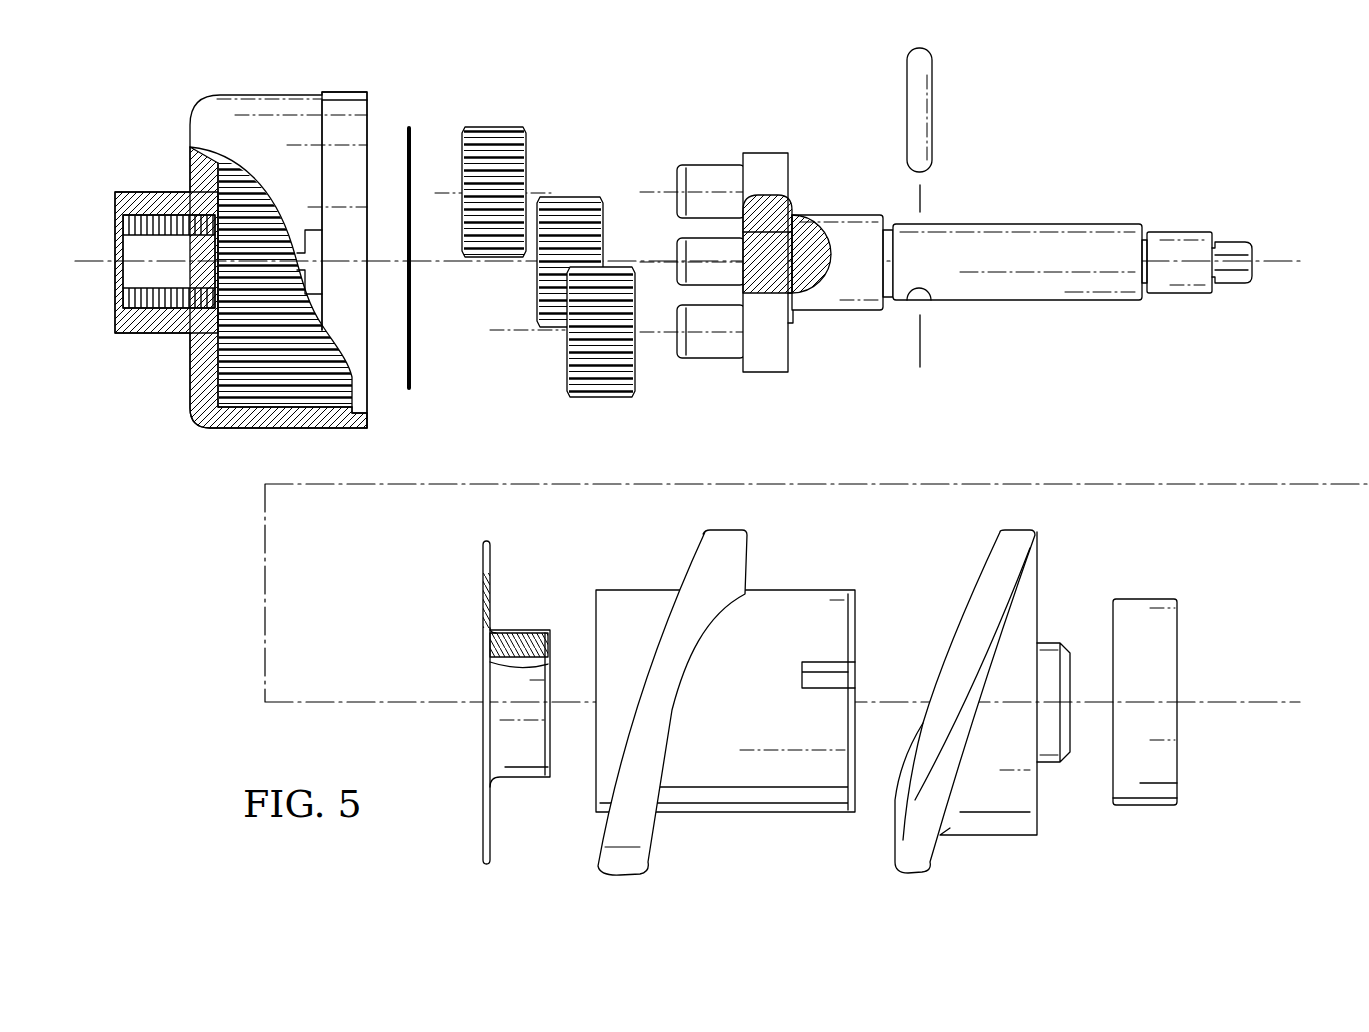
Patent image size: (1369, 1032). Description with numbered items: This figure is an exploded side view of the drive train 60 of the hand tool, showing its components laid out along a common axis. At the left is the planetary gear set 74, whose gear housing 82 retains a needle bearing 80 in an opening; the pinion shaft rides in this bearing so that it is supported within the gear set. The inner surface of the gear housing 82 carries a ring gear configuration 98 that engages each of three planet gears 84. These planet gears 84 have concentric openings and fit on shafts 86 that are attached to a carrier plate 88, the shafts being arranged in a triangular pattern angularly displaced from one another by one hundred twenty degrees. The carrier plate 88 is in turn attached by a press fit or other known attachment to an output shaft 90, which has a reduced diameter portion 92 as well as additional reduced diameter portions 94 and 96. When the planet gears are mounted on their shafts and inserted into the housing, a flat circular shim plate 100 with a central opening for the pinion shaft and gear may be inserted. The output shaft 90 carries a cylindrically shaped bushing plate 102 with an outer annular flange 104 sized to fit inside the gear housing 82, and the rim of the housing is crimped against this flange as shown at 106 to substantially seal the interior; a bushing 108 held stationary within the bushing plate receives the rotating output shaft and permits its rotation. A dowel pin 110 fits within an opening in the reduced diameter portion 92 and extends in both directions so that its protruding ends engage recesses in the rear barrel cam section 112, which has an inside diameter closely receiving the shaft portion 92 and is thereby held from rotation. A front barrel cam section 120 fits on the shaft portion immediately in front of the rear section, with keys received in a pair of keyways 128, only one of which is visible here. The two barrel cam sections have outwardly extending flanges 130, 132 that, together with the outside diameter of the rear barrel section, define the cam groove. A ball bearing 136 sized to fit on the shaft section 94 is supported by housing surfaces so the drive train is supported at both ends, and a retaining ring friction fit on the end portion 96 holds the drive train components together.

The drive assembly 60 is at (1122, 105).
The planetary gear set 74 is at (259, 85).
The needle bearing 80 is at (152, 298).
The gear housing 82 is at (190, 402).
The planet gears 84 is at (618, 285).
The shafts 86 is at (720, 320).
The carrier plate 88 is at (763, 173).
The output shaft 90 is at (853, 233).
The reduced diameter portion 92 is at (1030, 283).
The reduced diameter portion 94 is at (1178, 283).
The reduced diameter portion 96 is at (1232, 240).
The ring gear configuration 98 is at (258, 383).
The shim plate 100 is at (412, 132).
The bushing plate 102 is at (528, 778).
The annular flange 104 is at (487, 561).
The crimp 106 is at (367, 112).
The bushing 108 is at (490, 646).
The dowel pin 110 is at (925, 117).
The rear barrel cam section 112 is at (913, 302).
The front barrel cam section 120 is at (987, 837).
The keyways 128 is at (852, 682).
The outwardly extending flange 130 is at (715, 557).
The outwardly extending flange 132 is at (1010, 545).
The ball bearing 136 is at (1168, 682).